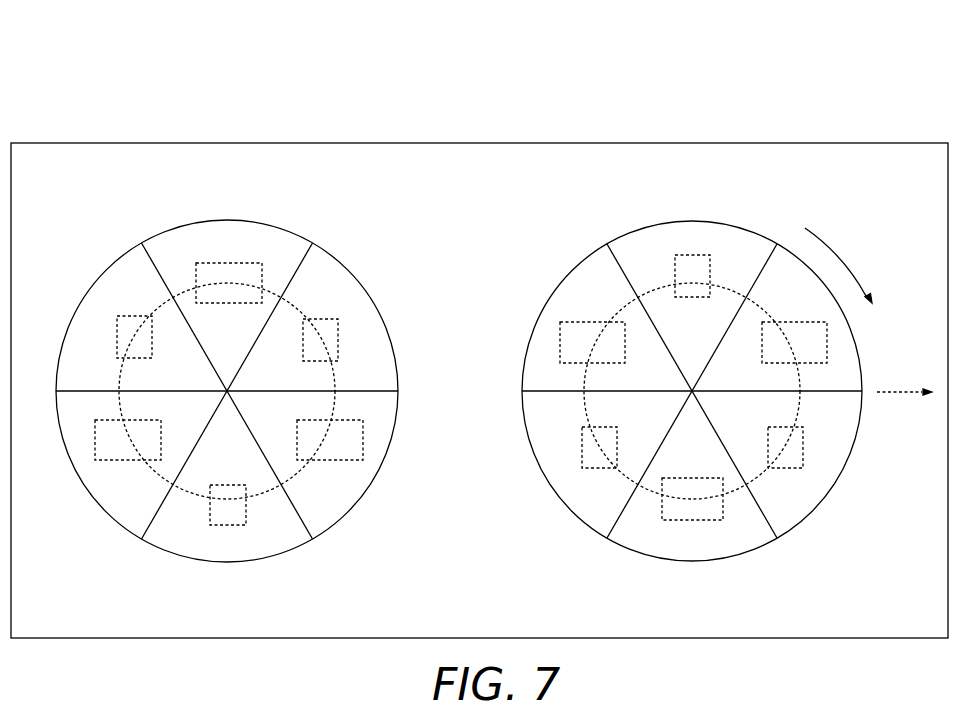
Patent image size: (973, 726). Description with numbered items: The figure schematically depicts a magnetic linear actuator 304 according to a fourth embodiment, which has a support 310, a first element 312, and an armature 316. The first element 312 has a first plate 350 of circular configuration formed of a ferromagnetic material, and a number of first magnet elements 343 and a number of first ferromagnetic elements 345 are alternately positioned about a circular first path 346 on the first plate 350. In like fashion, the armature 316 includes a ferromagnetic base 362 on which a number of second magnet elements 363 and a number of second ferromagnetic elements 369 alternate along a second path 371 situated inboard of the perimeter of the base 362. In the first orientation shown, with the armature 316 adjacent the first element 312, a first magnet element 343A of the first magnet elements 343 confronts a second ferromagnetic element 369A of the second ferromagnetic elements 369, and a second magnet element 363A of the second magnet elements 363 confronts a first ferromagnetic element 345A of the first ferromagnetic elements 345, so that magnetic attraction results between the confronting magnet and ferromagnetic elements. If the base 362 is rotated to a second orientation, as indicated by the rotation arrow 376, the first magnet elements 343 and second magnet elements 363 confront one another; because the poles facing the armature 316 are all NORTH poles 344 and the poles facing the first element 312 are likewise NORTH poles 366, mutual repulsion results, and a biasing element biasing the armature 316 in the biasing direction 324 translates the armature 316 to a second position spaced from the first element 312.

The actuator 304 is at (692, 108).
The support 310 is at (368, 142).
The first element 312 is at (378, 276).
The armature 316 is at (766, 220).
The biasing direction 324 is at (893, 394).
The first magnet elements 343 is at (117, 318).
The first magnet element 343A is at (229, 525).
The NORTH poles 344 is at (117, 356).
The first ferromagnetic elements 345 is at (197, 276).
The first ferromagnetic element 345A is at (213, 263).
The first path 346 is at (167, 479).
The first plate 350 is at (328, 252).
The base 362 is at (802, 523).
The second magnet elements 363 is at (712, 268).
The second magnet element 363A is at (680, 256).
The NORTH poles 366 is at (690, 297).
The second ferromagnetic elements 369 is at (572, 322).
The second ferromagnetic element 369A is at (695, 520).
The second path 371 is at (808, 372).
The rotation arrow 376 is at (837, 252).